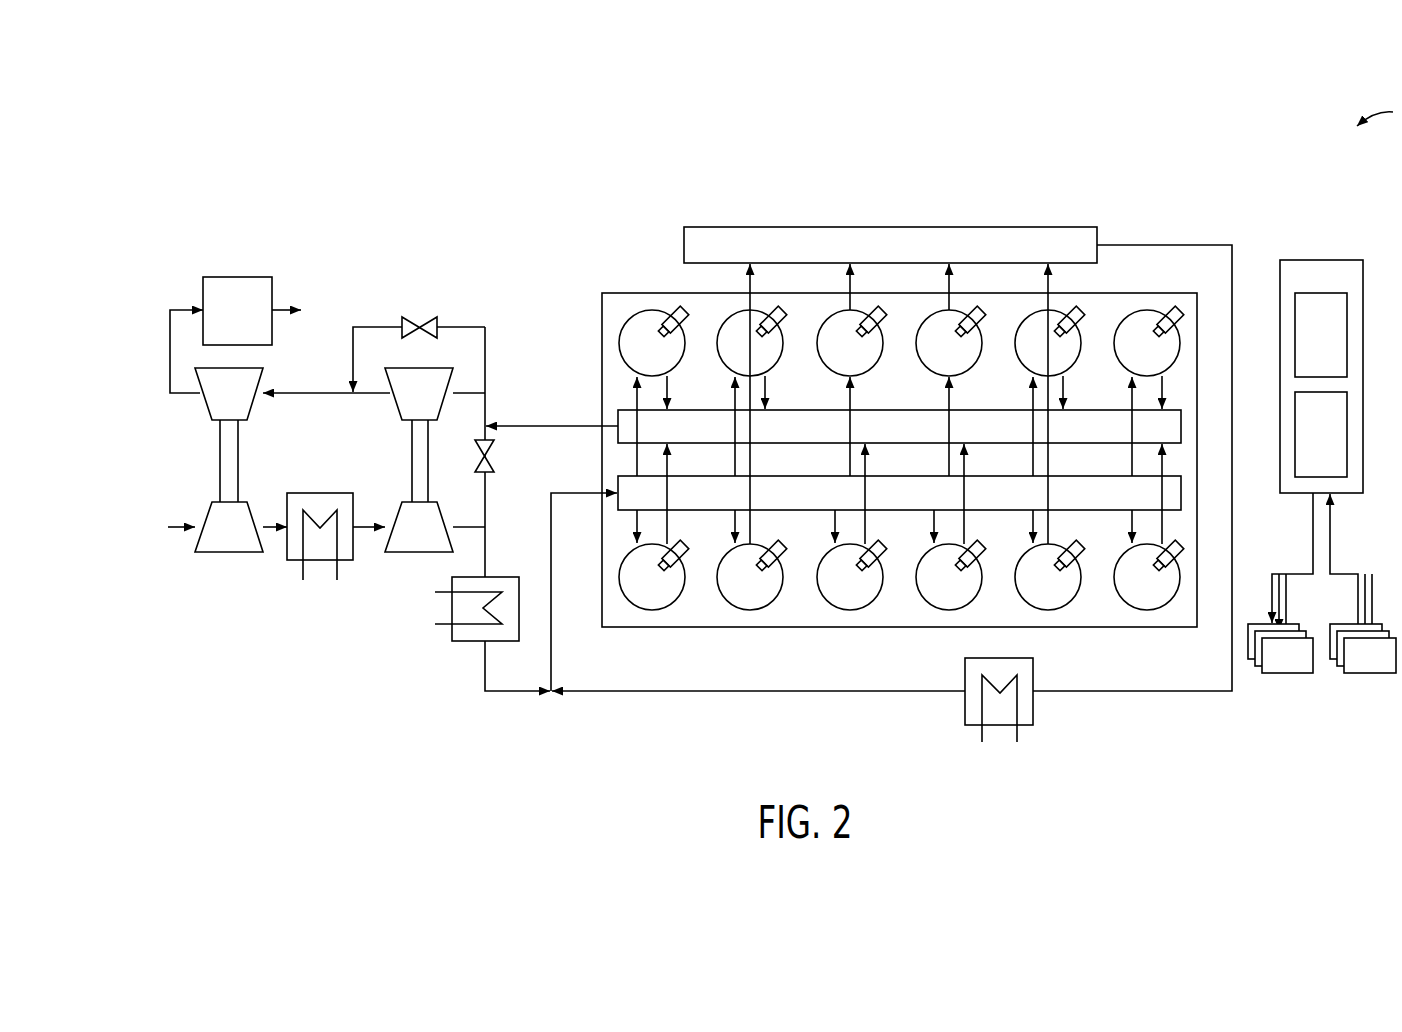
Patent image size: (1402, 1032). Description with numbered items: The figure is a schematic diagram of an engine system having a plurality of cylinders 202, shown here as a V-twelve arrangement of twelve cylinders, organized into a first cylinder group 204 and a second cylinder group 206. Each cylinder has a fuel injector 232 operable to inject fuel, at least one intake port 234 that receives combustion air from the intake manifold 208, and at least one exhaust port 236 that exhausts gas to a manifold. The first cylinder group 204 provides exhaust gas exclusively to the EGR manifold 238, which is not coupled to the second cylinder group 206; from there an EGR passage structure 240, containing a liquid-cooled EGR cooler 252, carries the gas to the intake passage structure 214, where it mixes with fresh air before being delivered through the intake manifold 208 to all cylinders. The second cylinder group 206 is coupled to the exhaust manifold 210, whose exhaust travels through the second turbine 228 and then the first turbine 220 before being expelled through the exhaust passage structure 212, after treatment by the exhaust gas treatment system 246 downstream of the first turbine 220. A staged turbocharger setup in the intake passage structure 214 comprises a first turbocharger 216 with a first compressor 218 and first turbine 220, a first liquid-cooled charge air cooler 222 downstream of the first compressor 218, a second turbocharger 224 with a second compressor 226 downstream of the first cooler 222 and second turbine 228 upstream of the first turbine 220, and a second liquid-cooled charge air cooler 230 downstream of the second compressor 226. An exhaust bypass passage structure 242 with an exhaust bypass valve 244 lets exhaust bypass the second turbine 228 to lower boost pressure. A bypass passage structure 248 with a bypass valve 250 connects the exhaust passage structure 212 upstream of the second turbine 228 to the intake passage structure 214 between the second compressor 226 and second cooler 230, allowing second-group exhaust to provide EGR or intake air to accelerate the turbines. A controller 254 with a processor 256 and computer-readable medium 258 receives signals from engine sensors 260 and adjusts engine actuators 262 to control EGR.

The plurality of cylinders 202 is at (599, 257).
The first cylinder group 204 is at (875, 347).
The second cylinder group 206 is at (877, 600).
The intake manifold 208 is at (899, 493).
The exhaust manifold 210 is at (899, 426).
The exhaust passage structure 212 is at (289, 308).
The intake passage structure 214 is at (182, 530).
The first turbocharger 216 is at (196, 460).
The first compressor 218 is at (229, 527).
The first turbine 220 is at (229, 394).
The first liquid-cooled charge air cooler 222 is at (320, 493).
The second turbocharger 224 is at (382, 460).
The second compressor 226 is at (419, 527).
The second turbine 228 is at (419, 394).
The second liquid-cooled charge air cooler 230 is at (503, 577).
The fuel injector 232 is at (883, 316).
The intake port 234 is at (835, 528).
The exhaust port 236 is at (866, 528).
The EGR manifold 238 is at (890, 245).
The EGR passage structure 240 is at (1230, 245).
The exhaust bypass passage structure 242 is at (475, 327).
The exhaust bypass valve 244 is at (410, 318).
The exhaust gas treatment system 246 is at (237, 311).
The bypass passage structure 248 is at (486, 502).
The bypass valve 250 is at (492, 456).
The liquid-cooled EGR cooler 252 is at (1034, 676).
The controller 254 is at (1321, 376).
The processor 256 is at (1321, 335).
The computer-readable medium 258 is at (1321, 434).
The engine sensors 260 is at (1363, 583).
The engine actuators 262 is at (1280, 583).